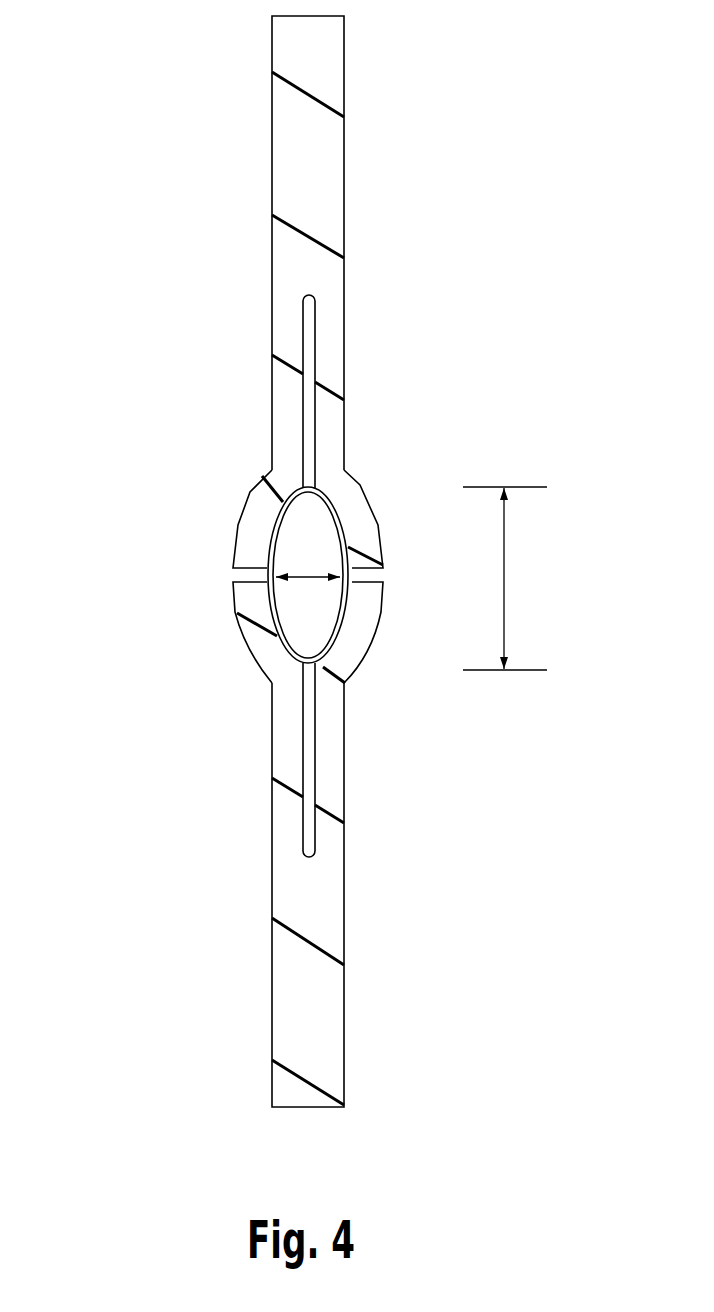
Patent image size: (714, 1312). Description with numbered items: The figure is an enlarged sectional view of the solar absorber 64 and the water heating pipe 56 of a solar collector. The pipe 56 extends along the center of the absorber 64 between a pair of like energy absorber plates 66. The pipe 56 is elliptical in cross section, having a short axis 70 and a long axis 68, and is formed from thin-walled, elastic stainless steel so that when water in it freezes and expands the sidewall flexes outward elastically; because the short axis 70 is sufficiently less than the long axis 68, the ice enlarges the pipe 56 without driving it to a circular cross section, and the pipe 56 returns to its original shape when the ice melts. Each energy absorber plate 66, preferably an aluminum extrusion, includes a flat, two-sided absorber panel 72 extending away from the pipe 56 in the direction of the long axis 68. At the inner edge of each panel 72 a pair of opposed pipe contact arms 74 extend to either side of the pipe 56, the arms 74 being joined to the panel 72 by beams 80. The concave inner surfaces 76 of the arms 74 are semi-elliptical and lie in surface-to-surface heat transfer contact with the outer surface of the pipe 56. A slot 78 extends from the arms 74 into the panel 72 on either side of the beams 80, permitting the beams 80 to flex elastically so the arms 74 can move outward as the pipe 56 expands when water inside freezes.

The solar absorber 64 is at (118, 85).
The energy absorber plate 66 is at (350, 132).
The absorber panel 72 is at (344, 235).
The slot 78 is at (310, 313).
The beam 80 is at (268, 338).
The water heating pipe 56 is at (325, 531).
The concave inner surface 76 is at (286, 525).
The pipe contact arm 74 is at (245, 532).
The short axis 70 is at (293, 583).
The long axis 68 is at (505, 572).